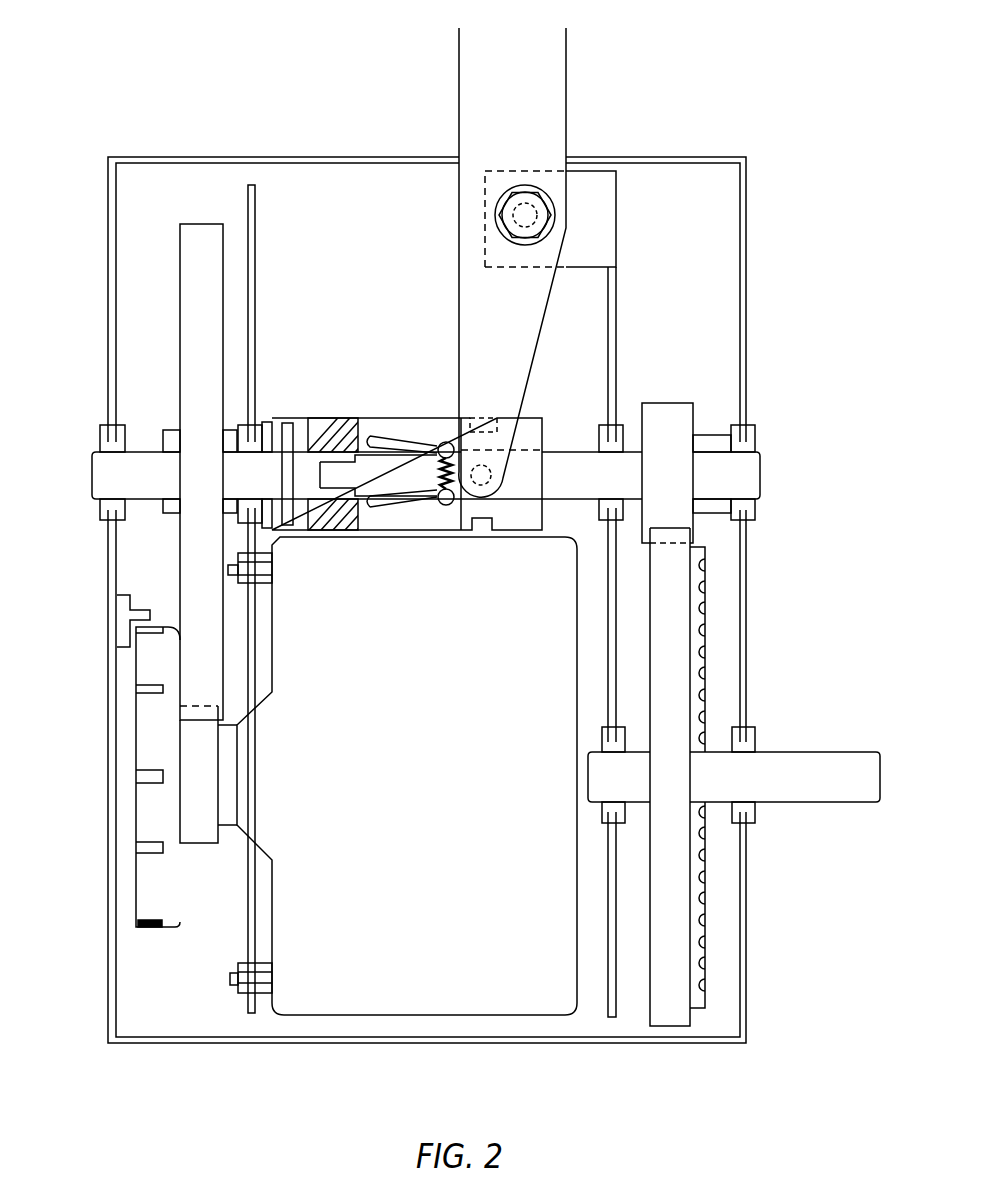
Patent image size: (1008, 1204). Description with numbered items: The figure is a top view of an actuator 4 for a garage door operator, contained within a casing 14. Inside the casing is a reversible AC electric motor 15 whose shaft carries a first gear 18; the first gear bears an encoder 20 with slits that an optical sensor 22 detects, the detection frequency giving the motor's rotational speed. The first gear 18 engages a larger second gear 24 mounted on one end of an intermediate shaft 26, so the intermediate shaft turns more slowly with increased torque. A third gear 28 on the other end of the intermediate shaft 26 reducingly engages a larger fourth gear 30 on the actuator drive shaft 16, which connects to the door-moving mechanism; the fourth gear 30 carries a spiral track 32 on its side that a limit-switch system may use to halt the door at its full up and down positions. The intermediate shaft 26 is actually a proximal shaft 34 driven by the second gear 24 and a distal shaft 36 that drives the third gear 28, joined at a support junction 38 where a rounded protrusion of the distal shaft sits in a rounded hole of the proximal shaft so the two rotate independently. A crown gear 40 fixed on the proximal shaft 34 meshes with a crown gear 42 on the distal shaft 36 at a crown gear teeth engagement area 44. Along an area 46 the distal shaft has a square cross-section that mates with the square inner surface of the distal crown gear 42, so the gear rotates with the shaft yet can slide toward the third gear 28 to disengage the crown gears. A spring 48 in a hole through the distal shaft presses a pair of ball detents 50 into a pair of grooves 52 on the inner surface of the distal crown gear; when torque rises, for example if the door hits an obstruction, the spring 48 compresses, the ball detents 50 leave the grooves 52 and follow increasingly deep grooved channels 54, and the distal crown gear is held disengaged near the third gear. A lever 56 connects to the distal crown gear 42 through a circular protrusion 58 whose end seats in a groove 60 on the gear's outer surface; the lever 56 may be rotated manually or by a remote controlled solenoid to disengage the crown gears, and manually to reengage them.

The actuator 4 is at (756, 1052).
The casing 14 is at (746, 232).
The reversible AC electric motor 15 is at (542, 1003).
The actuator drive shaft 16 is at (837, 757).
The first gear 18 is at (198, 843).
The encoder 20 is at (170, 921).
The optical sensor 22 is at (128, 617).
The second gear 24 is at (192, 230).
The intermediate shaft 26 is at (103, 462).
The third gear 28 is at (672, 407).
The fourth gear 30 is at (673, 608).
The spiral track 32 is at (700, 663).
The proximal shaft 34 is at (250, 466).
The distal shaft 36 is at (612, 470).
The support junction 38 is at (308, 527).
The crown gear 40 is at (300, 421).
The crown gear 42 is at (541, 417).
The crown gear teeth engagement area 44 is at (337, 523).
The area 46 is at (597, 545).
The spring 48 is at (452, 503).
The ball detents 50 is at (437, 496).
The grooves 52 is at (444, 442).
The grooved channels 54 is at (372, 438).
The lever 56 is at (553, 105).
The circular protrusion 58 is at (487, 477).
The groove 60 is at (481, 417).